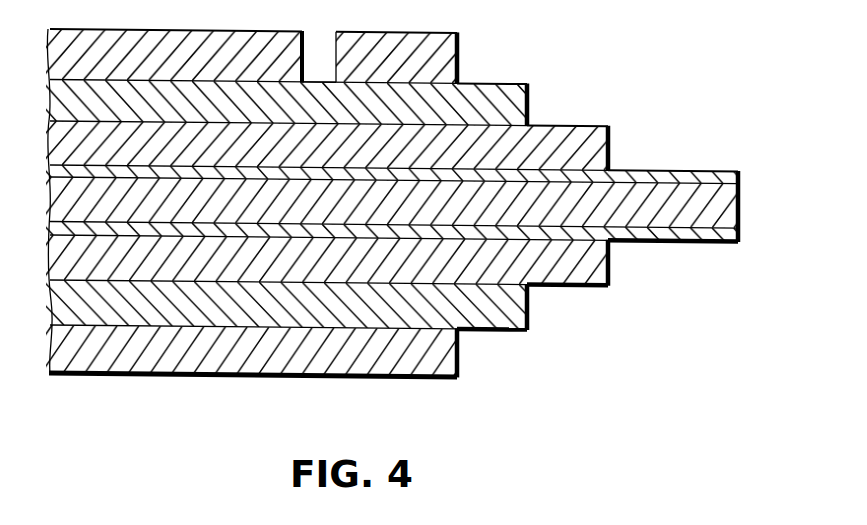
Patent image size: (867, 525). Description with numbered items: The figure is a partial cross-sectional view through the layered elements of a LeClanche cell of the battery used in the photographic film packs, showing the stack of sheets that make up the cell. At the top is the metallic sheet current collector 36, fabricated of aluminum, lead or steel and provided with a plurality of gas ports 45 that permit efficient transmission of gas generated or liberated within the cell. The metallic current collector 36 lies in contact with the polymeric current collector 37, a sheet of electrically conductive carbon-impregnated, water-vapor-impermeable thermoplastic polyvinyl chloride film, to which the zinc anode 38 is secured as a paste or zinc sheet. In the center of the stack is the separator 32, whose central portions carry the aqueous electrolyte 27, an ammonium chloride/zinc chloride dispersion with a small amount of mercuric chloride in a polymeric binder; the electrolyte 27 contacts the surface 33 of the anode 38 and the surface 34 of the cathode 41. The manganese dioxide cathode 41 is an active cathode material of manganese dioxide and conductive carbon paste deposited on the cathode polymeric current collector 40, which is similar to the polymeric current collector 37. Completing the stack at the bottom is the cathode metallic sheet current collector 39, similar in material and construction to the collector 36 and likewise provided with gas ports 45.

The aqueous electrolyte 27 is at (716, 166).
The separator 32 is at (700, 208).
The surface of anode 33 is at (377, 172).
The surface of cathode 34 is at (458, 235).
The metallic sheet current collector 36 is at (446, 57).
The polymeric current collector 37 is at (503, 103).
The zinc anode 38 is at (585, 147).
The cathode metallic sheet current collector 39 is at (434, 356).
The cathode polymeric current collector 40 is at (490, 314).
The manganese dioxide cathode 41 is at (585, 272).
The gas ports 45 is at (318, 57).